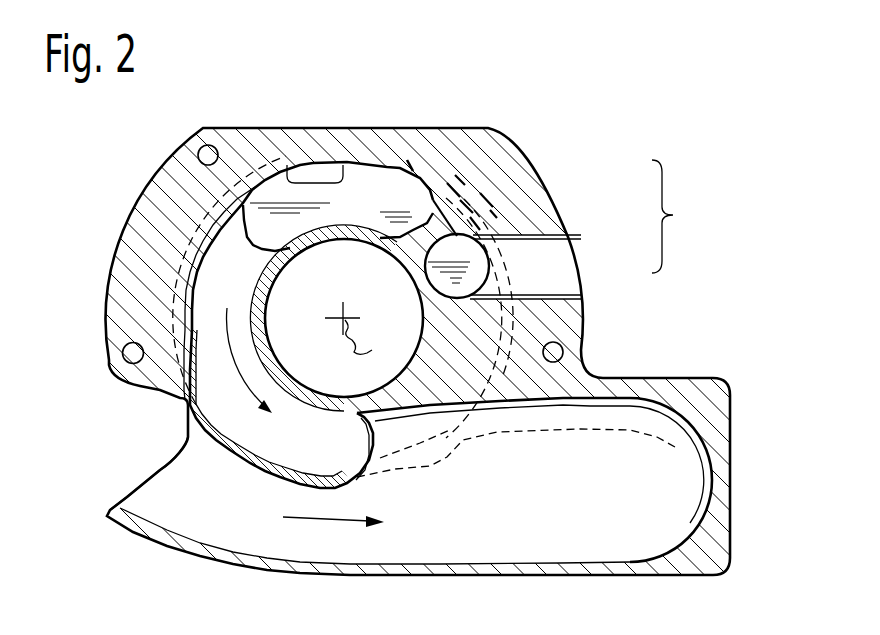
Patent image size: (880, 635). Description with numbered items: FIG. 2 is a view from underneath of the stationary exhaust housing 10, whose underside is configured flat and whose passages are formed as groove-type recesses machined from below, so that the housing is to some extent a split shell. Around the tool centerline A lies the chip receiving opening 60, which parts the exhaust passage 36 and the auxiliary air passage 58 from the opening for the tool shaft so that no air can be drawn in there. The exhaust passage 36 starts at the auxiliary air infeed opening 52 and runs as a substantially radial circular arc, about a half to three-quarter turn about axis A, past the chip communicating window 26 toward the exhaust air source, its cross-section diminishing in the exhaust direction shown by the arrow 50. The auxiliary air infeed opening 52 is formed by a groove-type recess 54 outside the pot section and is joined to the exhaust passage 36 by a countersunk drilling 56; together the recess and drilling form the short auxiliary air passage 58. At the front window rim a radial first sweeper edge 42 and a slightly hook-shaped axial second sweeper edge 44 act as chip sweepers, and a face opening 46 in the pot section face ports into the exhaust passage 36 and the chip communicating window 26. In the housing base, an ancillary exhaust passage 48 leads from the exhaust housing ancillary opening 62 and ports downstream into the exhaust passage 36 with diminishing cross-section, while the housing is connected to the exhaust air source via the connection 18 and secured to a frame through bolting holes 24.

The exhaust housing 10 is at (512, 138).
The connection 18 is at (730, 385).
The bolting holes 24 is at (203, 154).
The chip communicating window 26 is at (407, 158).
The exhaust passage 36 is at (420, 197).
The first sweeper edge 42 is at (248, 168).
The second sweeper edge 44 is at (289, 158).
The face opening 46 is at (323, 178).
The ancillary exhaust passage 48 is at (193, 508).
The arrow (exhaust direction) 50 is at (227, 360).
The auxiliary air infeed opening 52 is at (583, 270).
The groove-type recess 54 is at (543, 257).
The countersunk drilling 56 is at (437, 243).
The auxiliary air passage 58 is at (679, 216).
The chip receiving opening 60 is at (258, 332).
The exhaust housing ancillary opening 62 is at (133, 502).
The tool centerline (axis of rotation) A is at (358, 332).